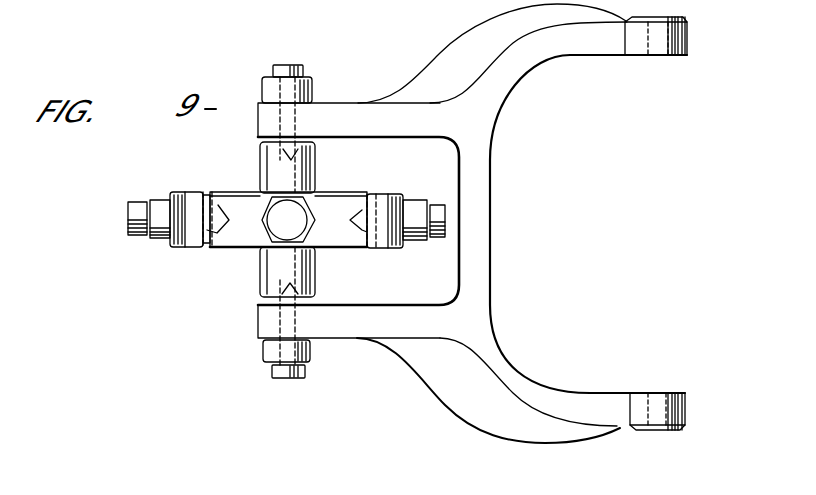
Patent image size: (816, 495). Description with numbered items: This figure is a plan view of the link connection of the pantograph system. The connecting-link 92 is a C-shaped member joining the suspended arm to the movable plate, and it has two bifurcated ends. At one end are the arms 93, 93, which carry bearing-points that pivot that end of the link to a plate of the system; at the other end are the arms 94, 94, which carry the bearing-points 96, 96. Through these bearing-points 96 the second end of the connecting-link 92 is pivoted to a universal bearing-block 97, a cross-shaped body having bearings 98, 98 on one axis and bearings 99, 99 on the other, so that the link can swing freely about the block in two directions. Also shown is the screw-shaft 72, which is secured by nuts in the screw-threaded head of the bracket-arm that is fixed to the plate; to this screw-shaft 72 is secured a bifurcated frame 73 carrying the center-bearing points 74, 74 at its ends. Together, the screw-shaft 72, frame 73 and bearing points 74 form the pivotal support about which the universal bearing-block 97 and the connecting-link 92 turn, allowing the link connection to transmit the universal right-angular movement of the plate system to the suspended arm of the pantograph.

The screw-shaft 72 is at (288, 219).
The bifurcated frame 73 is at (341, 219).
The center-bearing points 74 is at (134, 243).
The connecting-link 92 is at (482, 218).
The arms 93 is at (627, 50).
The arms 94 is at (334, 111).
The bearing-points 96 is at (295, 66).
The universal bearing-block 97 is at (312, 194).
The bearings 98 is at (218, 205).
The bearings 99 is at (284, 150).